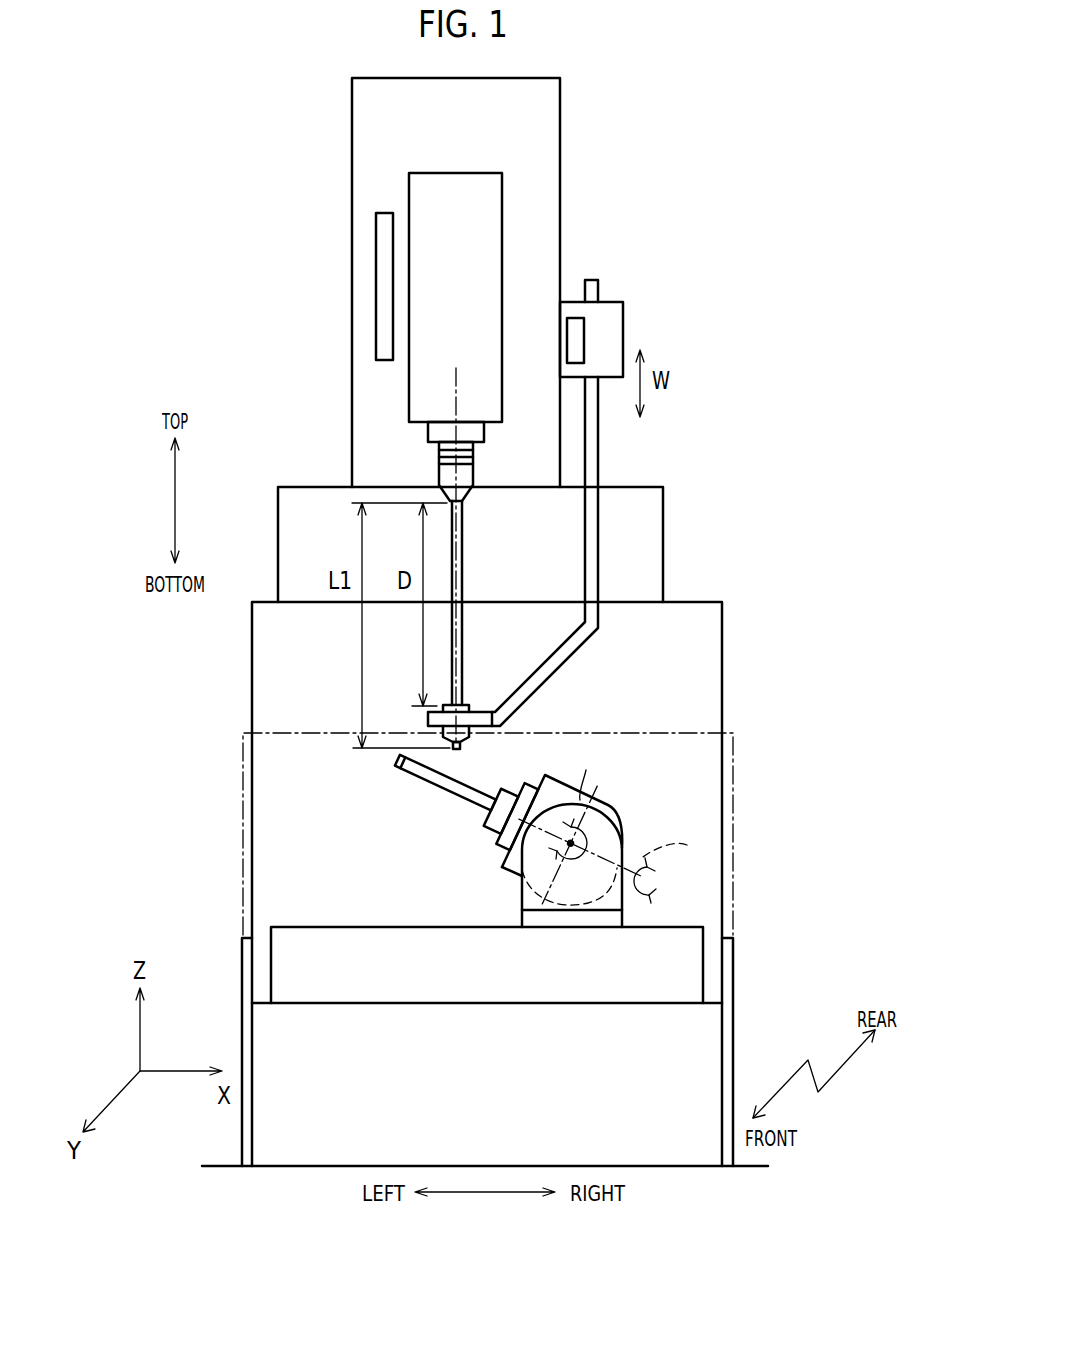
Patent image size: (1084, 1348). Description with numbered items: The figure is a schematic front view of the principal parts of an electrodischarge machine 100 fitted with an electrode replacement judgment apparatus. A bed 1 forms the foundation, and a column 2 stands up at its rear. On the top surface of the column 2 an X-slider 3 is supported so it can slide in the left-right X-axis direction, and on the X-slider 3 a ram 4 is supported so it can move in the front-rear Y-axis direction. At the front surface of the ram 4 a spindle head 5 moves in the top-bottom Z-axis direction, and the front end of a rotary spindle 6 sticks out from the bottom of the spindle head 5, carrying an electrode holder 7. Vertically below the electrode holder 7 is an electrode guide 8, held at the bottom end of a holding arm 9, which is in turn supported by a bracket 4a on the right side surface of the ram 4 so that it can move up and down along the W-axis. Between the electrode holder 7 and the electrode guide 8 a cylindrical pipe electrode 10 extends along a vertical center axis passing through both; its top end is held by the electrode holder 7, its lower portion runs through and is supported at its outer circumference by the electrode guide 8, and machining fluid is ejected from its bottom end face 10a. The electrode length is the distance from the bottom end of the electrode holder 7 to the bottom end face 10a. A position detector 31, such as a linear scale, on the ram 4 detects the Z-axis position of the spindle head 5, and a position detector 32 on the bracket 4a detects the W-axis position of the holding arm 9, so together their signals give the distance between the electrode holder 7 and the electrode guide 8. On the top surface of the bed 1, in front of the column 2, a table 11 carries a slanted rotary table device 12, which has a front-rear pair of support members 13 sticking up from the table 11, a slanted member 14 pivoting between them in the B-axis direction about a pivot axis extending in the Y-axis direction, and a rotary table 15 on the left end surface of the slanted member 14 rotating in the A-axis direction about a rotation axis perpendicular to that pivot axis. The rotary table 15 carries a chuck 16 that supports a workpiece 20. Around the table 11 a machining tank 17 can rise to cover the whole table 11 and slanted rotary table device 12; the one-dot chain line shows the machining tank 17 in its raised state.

The machine tool 100 is at (764, 160).
The bed 1 is at (678, 1053).
The column 2 is at (722, 627).
The X-slider 3 is at (663, 513).
The ram 4 is at (560, 165).
The bracket 4a is at (623, 328).
The spindle head 5 is at (409, 196).
The rotary spindle 6 is at (428, 435).
The electrode holder 7 is at (439, 478).
The electrode guide 8 is at (441, 738).
The holding arm 9 is at (598, 450).
The pipe electrode 10 is at (462, 565).
The bottom end face 10a is at (462, 748).
The table 11 is at (680, 980).
The slanted rotary table device 12 is at (702, 782).
The support members 13 is at (521, 896).
The slanted member 14 is at (610, 807).
The rotary table 15 is at (503, 862).
The chuck 16 is at (490, 812).
The machining tank 17 is at (240, 967).
The workpiece 20 is at (398, 762).
The position detector 31 is at (376, 318).
The position detector 32 is at (585, 325).